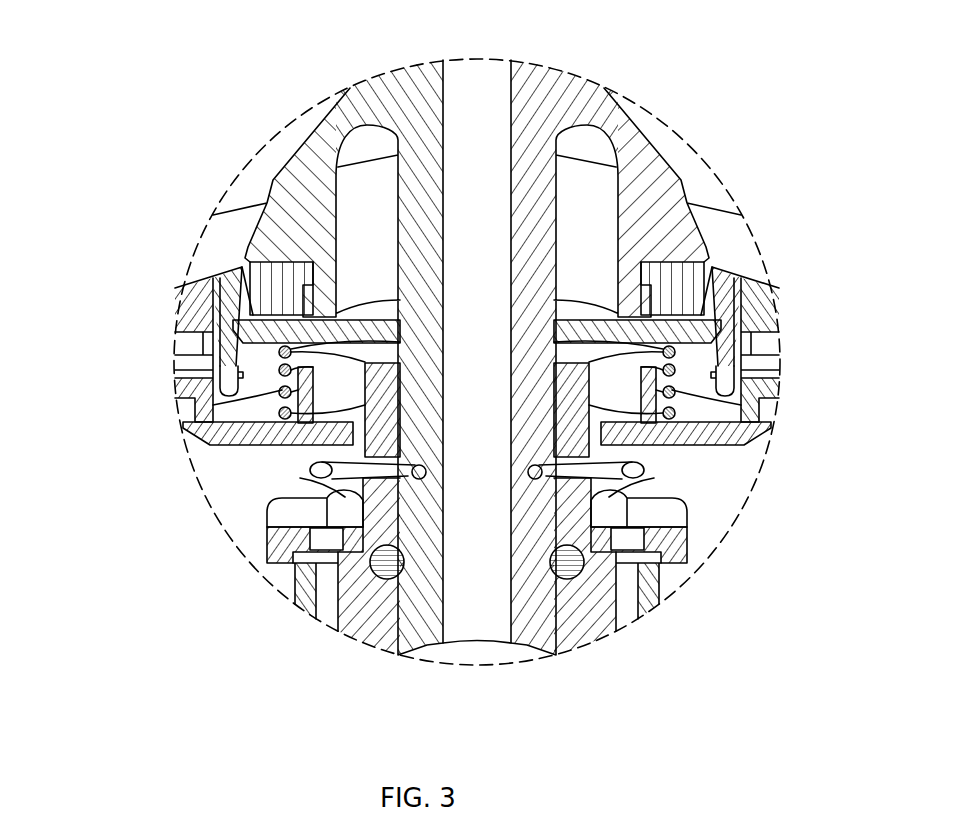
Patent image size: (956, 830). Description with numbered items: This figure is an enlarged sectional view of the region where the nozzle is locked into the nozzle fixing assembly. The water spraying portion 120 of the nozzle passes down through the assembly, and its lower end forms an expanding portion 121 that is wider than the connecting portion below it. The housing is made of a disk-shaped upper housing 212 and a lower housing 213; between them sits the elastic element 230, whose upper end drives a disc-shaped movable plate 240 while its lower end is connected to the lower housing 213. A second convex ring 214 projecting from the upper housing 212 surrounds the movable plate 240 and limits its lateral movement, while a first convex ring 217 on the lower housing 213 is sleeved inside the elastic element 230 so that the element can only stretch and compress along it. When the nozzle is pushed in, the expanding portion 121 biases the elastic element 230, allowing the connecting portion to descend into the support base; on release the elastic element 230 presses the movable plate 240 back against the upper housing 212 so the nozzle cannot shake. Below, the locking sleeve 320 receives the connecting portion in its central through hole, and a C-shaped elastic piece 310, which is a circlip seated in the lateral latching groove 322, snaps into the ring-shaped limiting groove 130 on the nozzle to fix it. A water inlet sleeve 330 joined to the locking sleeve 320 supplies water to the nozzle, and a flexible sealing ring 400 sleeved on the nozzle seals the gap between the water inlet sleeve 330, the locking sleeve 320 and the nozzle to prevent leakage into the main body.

The water spraying portion 120 is at (592, 110).
The expanding portion 121 is at (652, 253).
The limiting groove 130 is at (415, 478).
The upper housing 212 is at (200, 290).
The lower housing 213 is at (217, 445).
The second convex ring 214 is at (236, 378).
The first convex ring 217 is at (653, 380).
The elastic element 230 is at (673, 403).
The movable plate 240 is at (680, 335).
The elastic piece 310 is at (643, 477).
The locking sleeve 320 is at (677, 543).
The latching groove 322 is at (380, 476).
The water inlet sleeve 330 is at (597, 620).
The sealing ring 400 is at (392, 560).